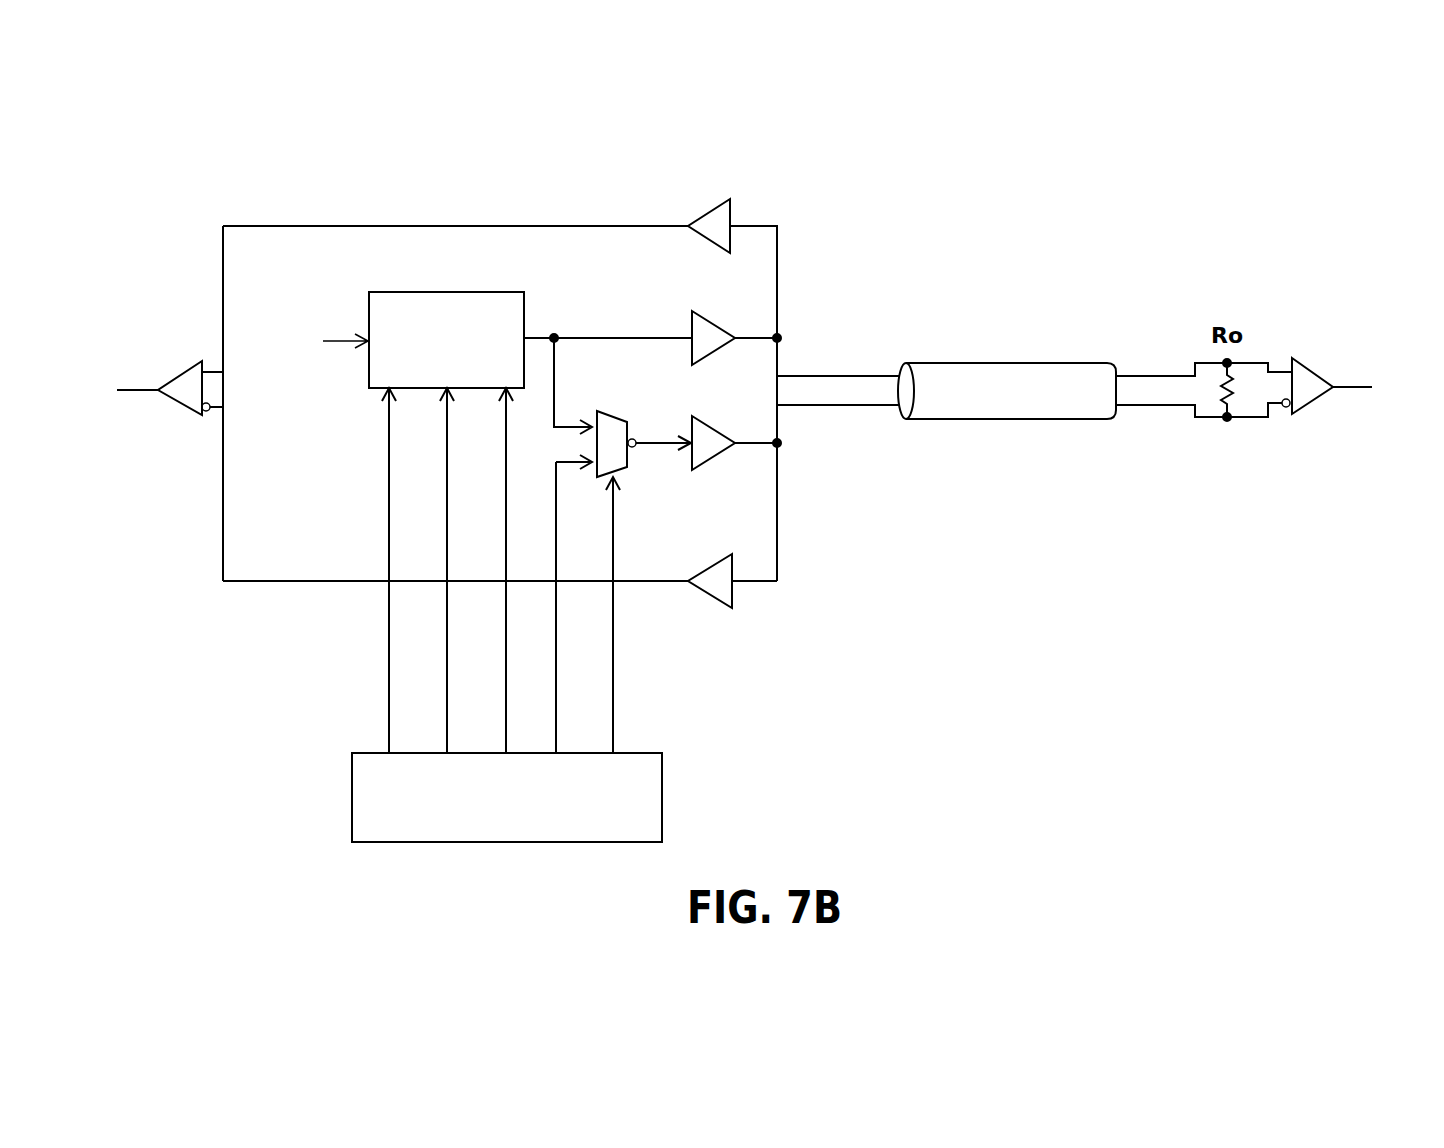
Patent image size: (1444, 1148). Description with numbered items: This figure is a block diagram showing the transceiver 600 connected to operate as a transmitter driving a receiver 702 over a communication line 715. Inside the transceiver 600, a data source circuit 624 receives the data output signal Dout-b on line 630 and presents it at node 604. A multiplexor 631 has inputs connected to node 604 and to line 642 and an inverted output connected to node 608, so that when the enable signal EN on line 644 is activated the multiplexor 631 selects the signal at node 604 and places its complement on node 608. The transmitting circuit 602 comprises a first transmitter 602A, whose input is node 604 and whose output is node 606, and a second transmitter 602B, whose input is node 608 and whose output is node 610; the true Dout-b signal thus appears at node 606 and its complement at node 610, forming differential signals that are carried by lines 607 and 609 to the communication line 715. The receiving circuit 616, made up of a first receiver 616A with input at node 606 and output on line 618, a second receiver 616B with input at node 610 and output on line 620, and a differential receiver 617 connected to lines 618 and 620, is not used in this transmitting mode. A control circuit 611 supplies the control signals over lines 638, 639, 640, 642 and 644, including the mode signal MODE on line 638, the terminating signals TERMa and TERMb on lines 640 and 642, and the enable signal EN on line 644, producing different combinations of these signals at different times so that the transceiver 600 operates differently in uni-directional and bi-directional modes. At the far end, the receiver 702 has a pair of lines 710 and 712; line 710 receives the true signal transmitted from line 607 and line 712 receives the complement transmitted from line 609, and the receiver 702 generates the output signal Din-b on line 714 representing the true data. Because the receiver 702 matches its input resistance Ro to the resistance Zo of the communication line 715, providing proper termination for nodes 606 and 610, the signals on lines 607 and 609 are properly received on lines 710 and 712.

The transceiver 600 is at (1184, 178).
The transmitting circuit 602 is at (699, 382).
The first transmitter 602A is at (718, 353).
The second transmitter 602B is at (718, 458).
The node 604 is at (552, 336).
The node 606 is at (780, 337).
The line 607 is at (839, 375).
The node 608 is at (647, 436).
The line 609 is at (841, 406).
The node 610 is at (780, 446).
The control circuit 611 is at (663, 797).
The receiving circuit 616 is at (737, 197).
The first receiver 616A is at (709, 206).
The second receiver 616B is at (709, 564).
The differential receiver 617 is at (180, 372).
The line 618 is at (510, 225).
The line 620 is at (650, 582).
The data source circuit 624 is at (450, 292).
The line 630 is at (337, 342).
The multiplexor 631 is at (611, 412).
The line 638 is at (390, 698).
The line 639 is at (448, 698).
The line 640 is at (507, 698).
The line 642 is at (557, 698).
The line 644 is at (614, 698).
The receiver 702 is at (1314, 367).
The line 710 is at (1154, 376).
The line 712 is at (1156, 406).
The line 714 is at (1356, 395).
The communication line 715 is at (1009, 363).